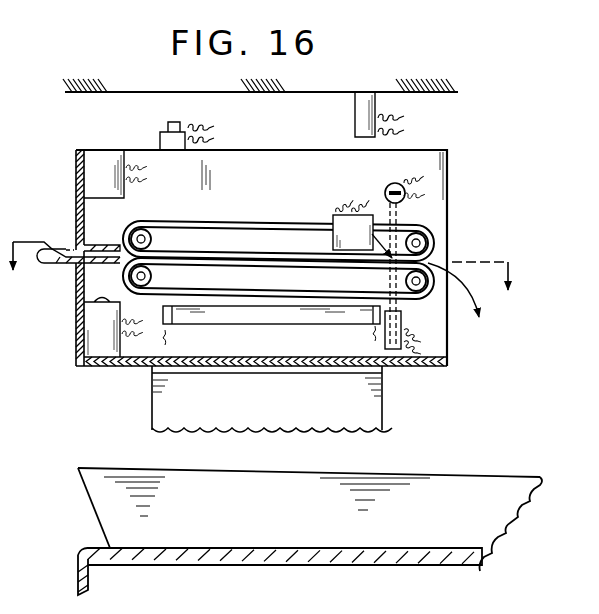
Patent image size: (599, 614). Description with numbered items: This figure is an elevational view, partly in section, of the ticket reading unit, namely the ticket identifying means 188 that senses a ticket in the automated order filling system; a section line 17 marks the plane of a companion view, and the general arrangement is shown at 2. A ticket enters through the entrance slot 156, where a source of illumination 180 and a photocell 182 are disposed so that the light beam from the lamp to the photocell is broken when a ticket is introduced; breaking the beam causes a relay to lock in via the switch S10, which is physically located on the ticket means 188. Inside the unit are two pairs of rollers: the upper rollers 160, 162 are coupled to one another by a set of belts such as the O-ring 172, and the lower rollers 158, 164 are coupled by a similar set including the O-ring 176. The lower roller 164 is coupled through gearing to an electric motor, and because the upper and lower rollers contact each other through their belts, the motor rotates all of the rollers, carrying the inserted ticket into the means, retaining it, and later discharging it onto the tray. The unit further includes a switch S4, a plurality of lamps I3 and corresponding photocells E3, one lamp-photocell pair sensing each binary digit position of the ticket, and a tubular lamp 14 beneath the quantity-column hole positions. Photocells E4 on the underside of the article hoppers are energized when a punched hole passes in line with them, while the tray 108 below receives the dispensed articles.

The apparatus 2 is at (3, 109).
The ticket identifying means 188 is at (66, 146).
The photocell 182 is at (100, 162).
The source of illumination 180 is at (105, 344).
The switch S10 is at (186, 131).
The photocell E4 is at (376, 100).
The entrance slot 156 is at (62, 244).
The section line 17- 17 is at (261, 280).
The O-ring 172 is at (190, 222).
The upper roller 160 is at (152, 236).
The upper roller 162 is at (426, 243).
The O-ring 176 is at (345, 294).
The lower roller 158 is at (152, 276).
The lower roller 164 is at (420, 288).
The switch S4 is at (333, 215).
The lamp I3 is at (398, 200).
The card/plate 14 is at (275, 319).
The photocell E3 is at (392, 350).
The tray 108 is at (278, 531).